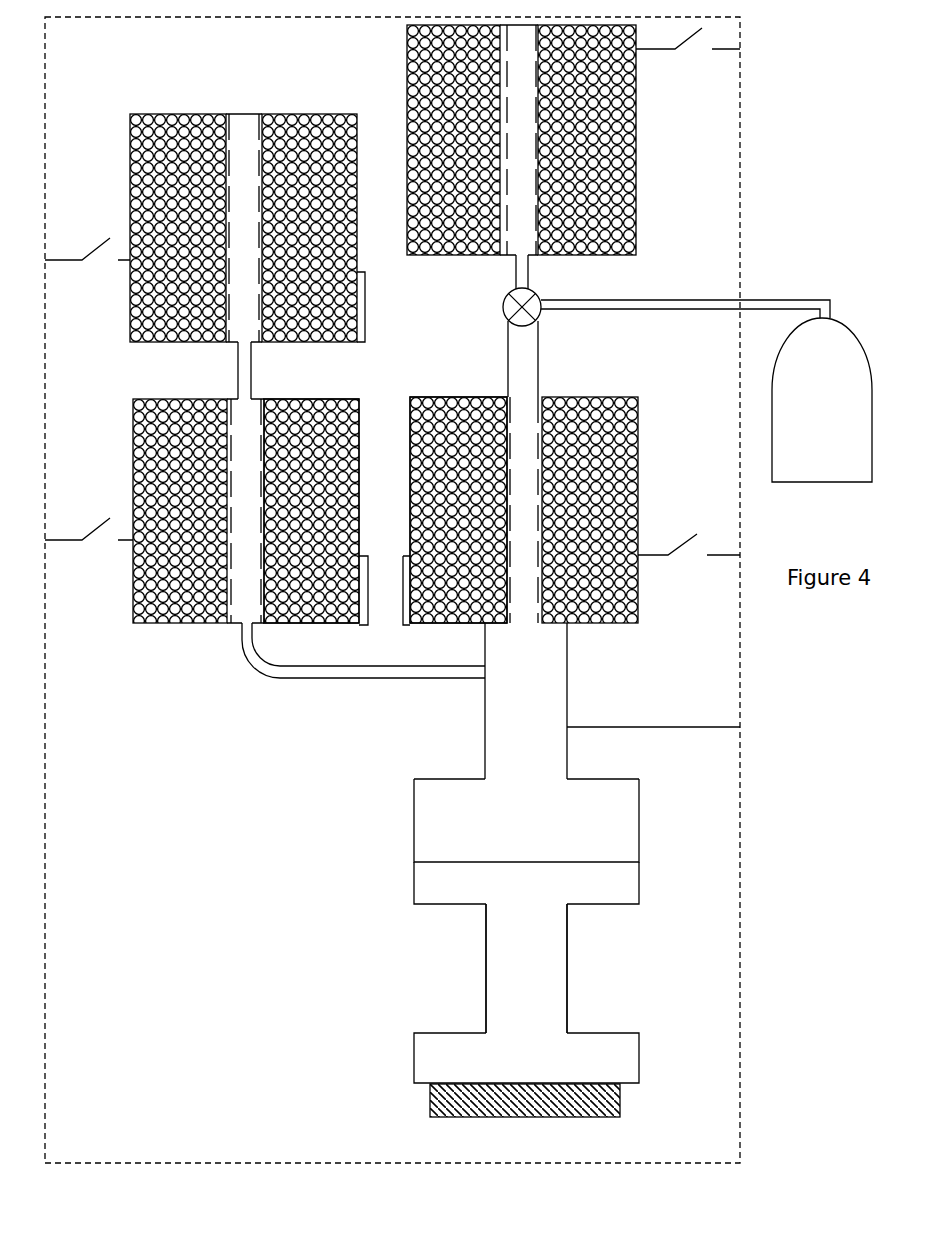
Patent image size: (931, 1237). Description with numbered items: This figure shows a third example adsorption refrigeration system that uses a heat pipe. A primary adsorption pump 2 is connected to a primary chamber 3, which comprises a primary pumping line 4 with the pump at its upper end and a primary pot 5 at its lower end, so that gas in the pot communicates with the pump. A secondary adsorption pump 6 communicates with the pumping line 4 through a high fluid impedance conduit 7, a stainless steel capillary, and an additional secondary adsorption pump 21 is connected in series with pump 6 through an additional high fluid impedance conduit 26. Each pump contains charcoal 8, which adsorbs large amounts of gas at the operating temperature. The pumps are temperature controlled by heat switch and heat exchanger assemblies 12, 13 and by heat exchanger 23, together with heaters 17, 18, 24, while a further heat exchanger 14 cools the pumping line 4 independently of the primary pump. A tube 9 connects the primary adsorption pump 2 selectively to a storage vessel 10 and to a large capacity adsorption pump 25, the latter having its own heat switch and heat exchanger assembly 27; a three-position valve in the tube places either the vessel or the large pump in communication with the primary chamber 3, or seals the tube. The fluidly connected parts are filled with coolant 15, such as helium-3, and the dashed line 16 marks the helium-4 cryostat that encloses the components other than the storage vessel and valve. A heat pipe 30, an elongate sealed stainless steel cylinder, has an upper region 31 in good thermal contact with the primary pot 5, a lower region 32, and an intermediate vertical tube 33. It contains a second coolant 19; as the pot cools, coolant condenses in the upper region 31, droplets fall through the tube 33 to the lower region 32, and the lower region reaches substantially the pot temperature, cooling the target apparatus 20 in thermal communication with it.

The primary adsorption pump 2 is at (410, 447).
The primary chamber 3 is at (484, 768).
The primary pumping line 4 is at (484, 731).
The primary pot 5 is at (413, 822).
The secondary adsorption pump 6 is at (132, 436).
The high fluid impedance conduit 7 is at (318, 679).
The charcoal 8 is at (301, 415).
The tube 9 is at (686, 299).
The storage vessel 10 is at (771, 372).
The heat switch and heat exchanger assembly 12 is at (692, 530).
The heat switch and heat exchanger assembly 13 is at (105, 506).
The heat exchanger 14 is at (625, 725).
The coolant 15 is at (571, 822).
The cryostat 16 is at (46, 880).
The heater 17 is at (404, 554).
The heater 18 is at (369, 626).
The second coolant 19 is at (544, 997).
The target apparatus 20 is at (624, 1102).
The additional secondary adsorption pump 21 is at (283, 113).
The heat exchanger 23 is at (105, 236).
The heater 24 is at (364, 272).
The large capacity adsorption pump 25 is at (636, 152).
The additional high fluid impedance conduit 26 is at (236, 373).
The heat switch and heat exchanger assembly 27 is at (722, 61).
The heat pipe 30 is at (584, 950).
The upper region 31 is at (413, 883).
The lower region 32 is at (643, 1052).
The tube 33 is at (485, 946).